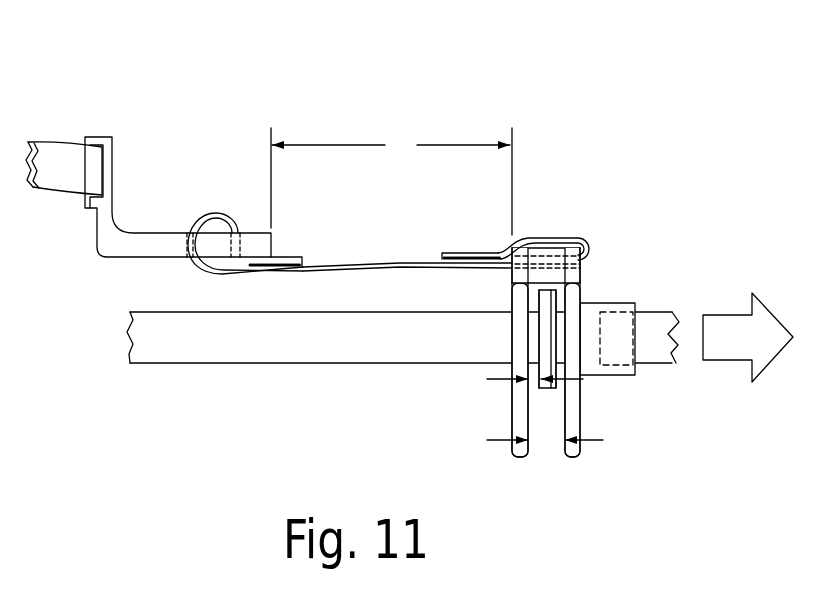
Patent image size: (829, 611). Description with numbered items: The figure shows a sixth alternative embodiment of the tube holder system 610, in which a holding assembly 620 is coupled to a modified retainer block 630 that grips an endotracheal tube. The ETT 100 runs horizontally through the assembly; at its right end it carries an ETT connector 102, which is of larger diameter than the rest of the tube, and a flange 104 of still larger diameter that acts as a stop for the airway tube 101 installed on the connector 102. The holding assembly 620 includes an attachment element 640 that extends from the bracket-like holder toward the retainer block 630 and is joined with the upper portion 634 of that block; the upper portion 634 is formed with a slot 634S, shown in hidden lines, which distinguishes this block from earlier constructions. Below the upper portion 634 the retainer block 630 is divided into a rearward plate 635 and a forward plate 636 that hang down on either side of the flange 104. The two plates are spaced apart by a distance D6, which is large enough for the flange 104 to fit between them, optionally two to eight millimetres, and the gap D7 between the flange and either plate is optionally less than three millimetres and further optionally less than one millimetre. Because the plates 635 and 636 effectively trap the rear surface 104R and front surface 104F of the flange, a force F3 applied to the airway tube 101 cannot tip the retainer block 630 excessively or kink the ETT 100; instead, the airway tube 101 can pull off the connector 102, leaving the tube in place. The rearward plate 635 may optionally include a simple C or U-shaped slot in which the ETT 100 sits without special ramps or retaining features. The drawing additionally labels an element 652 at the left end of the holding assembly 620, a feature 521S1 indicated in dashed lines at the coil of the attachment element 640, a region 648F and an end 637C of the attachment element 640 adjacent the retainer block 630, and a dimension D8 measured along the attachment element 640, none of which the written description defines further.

The ETT 100 is at (207, 353).
The airway tube 101 is at (652, 332).
The ETT connector 102 is at (608, 373).
The flange 104 is at (548, 390).
The front surface of the ETT flange 104F is at (557, 297).
The rear surface of the ETT flange 104R is at (545, 318).
The tube holder system 610 is at (407, 90).
The holding assembly 620 is at (152, 175).
The first side of pin 521S1 is at (202, 237).
The retainer block 630 is at (537, 316).
The upper portion of the retainer block 634 is at (512, 277).
The slot 634S is at (577, 270).
The rearward plate 635 is at (515, 457).
The forward plate 636 is at (570, 457).
The curled end of spring 637C is at (558, 290).
The attachment element 640 is at (377, 258).
The spring foot 648F is at (465, 252).
The strap 652 is at (65, 158).
The distance between the plates D6 is at (530, 439).
The distance between the flange and a plate D7 is at (520, 377).
The distance D8 is at (391, 181).
The force F3 is at (730, 325).